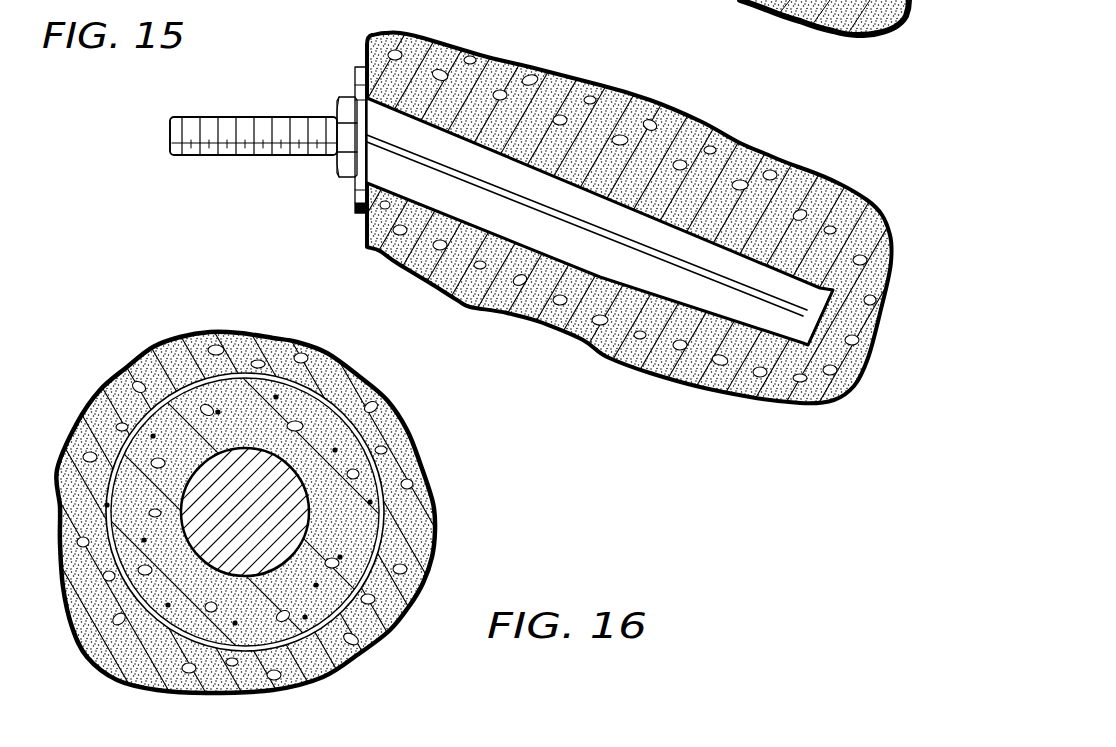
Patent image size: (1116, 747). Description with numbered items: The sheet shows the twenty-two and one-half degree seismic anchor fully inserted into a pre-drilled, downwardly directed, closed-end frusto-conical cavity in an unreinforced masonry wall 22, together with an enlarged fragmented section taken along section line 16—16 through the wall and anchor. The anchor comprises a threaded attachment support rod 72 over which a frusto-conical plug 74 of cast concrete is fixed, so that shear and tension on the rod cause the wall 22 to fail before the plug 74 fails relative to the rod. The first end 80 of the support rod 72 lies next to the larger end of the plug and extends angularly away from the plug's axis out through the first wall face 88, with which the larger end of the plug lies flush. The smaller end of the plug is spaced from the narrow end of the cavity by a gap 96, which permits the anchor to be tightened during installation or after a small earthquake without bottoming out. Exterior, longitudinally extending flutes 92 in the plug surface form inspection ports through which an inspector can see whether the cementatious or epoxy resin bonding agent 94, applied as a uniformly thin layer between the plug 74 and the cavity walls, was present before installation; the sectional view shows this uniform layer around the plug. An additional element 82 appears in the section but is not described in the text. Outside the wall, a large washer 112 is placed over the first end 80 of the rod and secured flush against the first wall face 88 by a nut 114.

In FIG. 15, the section line 16 is at (547, 110).
In FIG. 15, the unreinforced masonry wall 22 is at (650, 113).
In FIG. 16, the unreinforced masonry wall 22 is at (423, 470).
In FIG. 15, the threaded attachment support rod 72 is at (280, 93).
In FIG. 16, the threaded attachment support rod 72 is at (282, 543).
In FIG. 15, the frusto-conical plug 74 is at (728, 262).
In FIG. 16, the frusto-conical plug 74 is at (360, 448).
In FIG. 15, the first end of the support rod 80 is at (168, 137).
In FIG. 16, the reinforcing wires 82 is at (302, 625).
In FIG. 15, the first wall face 88 is at (366, 231).
In FIG. 15, the longitudinally extending flutes 92 is at (584, 342).
In FIG. 16, the longitudinally extending flutes 92 is at (105, 503).
In FIG. 16, the bonding agent 94 is at (177, 397).
In FIG. 15, the gap 96 is at (808, 345).
In FIG. 15, the large washer 112 is at (357, 218).
In FIG. 15, the nut 114 is at (337, 173).